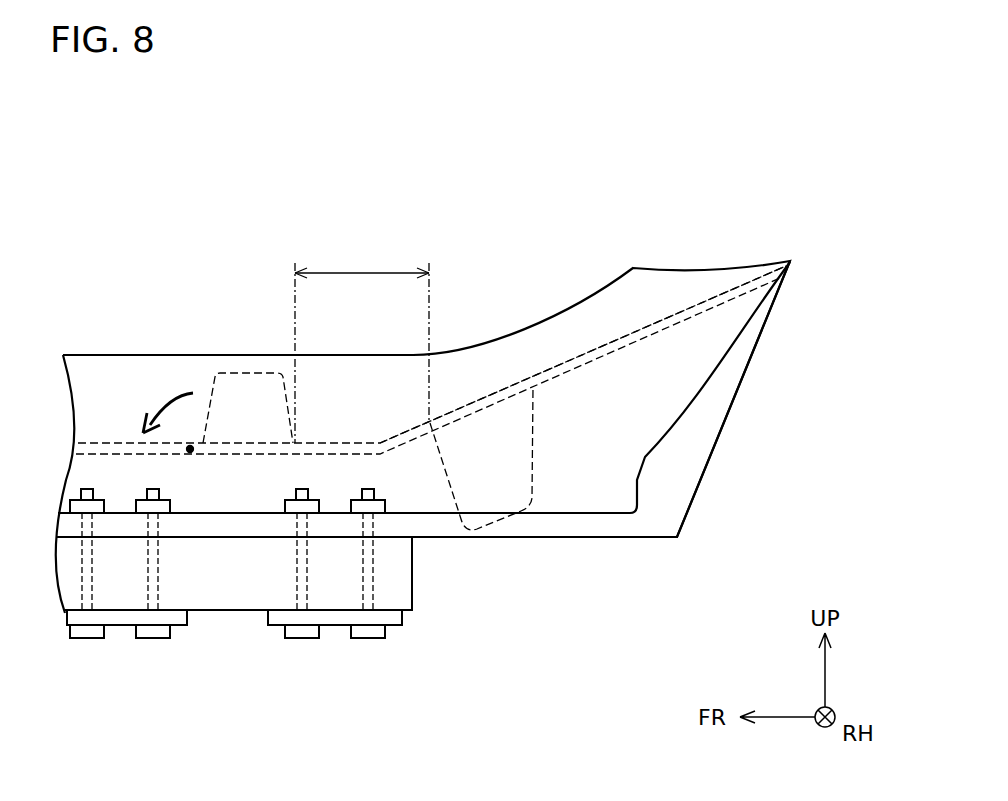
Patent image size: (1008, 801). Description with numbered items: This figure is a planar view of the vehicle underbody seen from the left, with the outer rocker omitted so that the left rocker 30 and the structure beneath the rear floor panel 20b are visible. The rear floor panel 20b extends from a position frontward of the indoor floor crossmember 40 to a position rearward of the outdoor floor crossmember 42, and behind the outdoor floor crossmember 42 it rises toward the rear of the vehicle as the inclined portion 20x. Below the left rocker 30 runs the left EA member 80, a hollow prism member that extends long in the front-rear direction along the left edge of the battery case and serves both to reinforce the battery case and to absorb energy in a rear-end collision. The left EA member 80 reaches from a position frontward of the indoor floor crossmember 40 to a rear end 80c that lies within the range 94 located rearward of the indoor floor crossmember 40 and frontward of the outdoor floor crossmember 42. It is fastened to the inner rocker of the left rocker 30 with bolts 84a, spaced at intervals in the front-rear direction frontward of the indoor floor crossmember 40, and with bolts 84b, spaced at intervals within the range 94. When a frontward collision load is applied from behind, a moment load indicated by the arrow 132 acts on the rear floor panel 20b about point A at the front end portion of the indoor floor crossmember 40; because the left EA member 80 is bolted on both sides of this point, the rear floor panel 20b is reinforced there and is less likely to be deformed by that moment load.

The rear floor panel 20b is at (125, 443).
The arrow 132 is at (163, 403).
The point A is at (190, 446).
The indoor floor crossmember 40 is at (245, 373).
The range 94 is at (362, 341).
The outdoor floor crossmember 42 is at (533, 440).
The inclined portion 20x is at (668, 320).
The left rocker 30 is at (692, 460).
The left EA member 80 is at (227, 598).
The rear end 80c is at (412, 575).
The bolts 84a is at (88, 640).
The bolts 84b is at (300, 640).